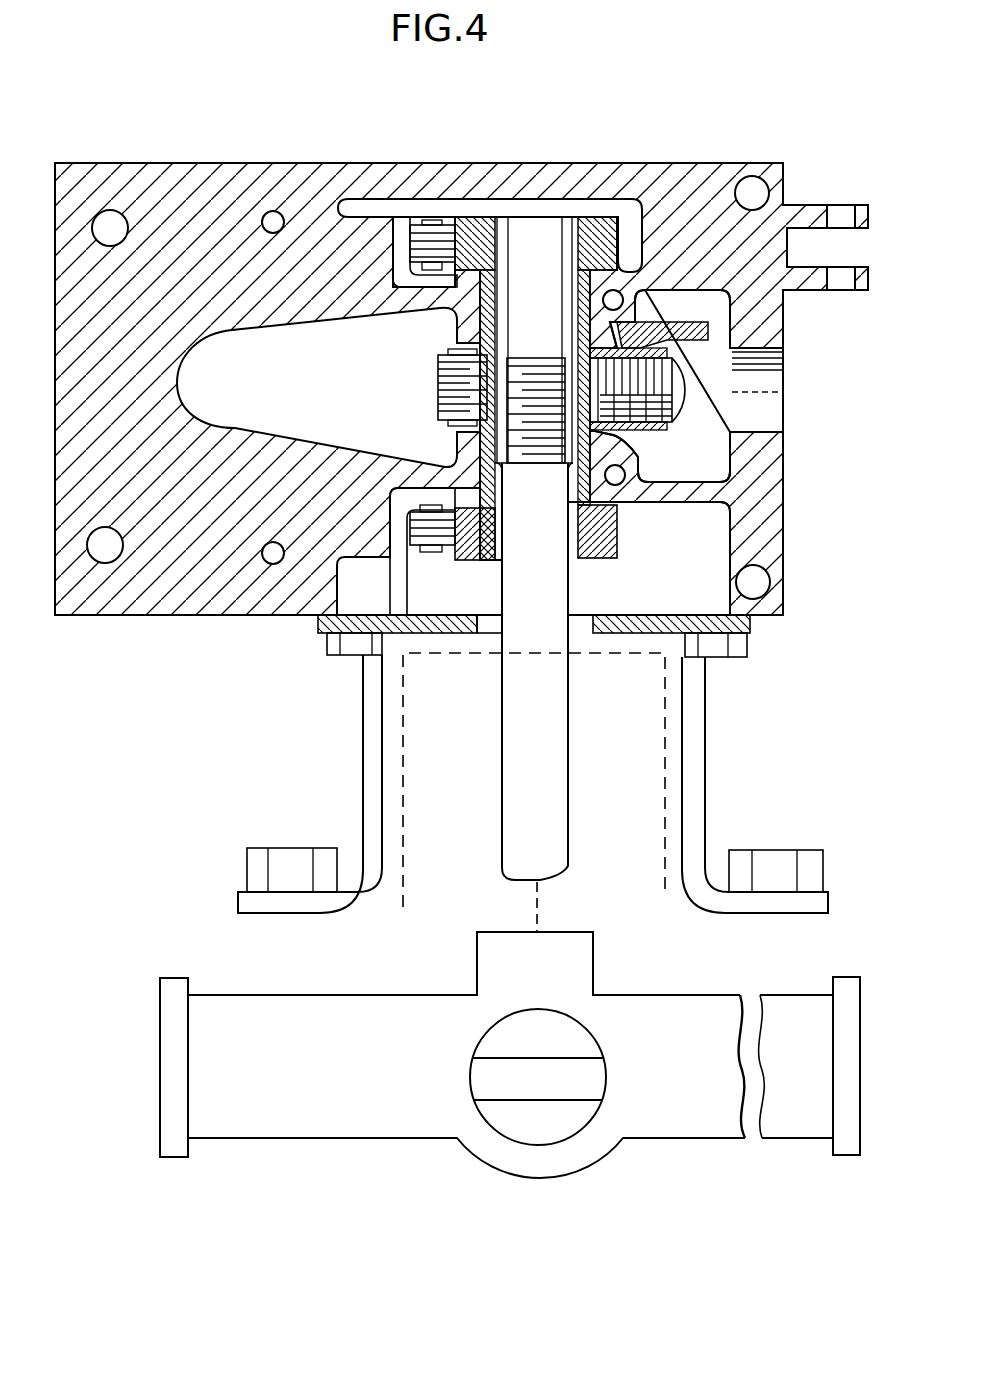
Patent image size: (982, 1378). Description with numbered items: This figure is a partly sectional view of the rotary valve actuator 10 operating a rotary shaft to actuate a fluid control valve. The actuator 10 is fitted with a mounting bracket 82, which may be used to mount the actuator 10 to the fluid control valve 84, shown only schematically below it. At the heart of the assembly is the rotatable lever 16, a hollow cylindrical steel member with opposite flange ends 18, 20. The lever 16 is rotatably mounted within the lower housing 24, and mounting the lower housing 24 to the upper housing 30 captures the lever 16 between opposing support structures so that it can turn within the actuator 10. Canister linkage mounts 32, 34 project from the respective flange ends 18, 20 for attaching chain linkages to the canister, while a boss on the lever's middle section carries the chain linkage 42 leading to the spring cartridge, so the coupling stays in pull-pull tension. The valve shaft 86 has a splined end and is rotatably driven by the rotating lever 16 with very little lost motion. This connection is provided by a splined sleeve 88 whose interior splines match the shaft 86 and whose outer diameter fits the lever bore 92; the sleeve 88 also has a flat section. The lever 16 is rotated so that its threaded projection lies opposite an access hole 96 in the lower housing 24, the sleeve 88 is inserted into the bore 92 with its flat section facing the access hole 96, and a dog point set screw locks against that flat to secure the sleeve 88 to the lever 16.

The rotary valve actuator 10 is at (196, 642).
The rotatable lever 16 is at (605, 560).
The flange end 18 is at (617, 525).
The flange end 20 is at (483, 217).
The lower housing 24 is at (783, 477).
The upper housing 30 is at (787, 305).
The canister linkage mount 32 is at (412, 548).
The canister linkage mount 34 is at (410, 222).
The chain linkage 42 is at (438, 394).
The mounting bracket 82 is at (363, 733).
The fluid control valve 84 is at (358, 995).
The valve shaft 86 is at (557, 745).
The splined sleeve 88 is at (528, 362).
The lever bore 92 is at (498, 560).
The access hole 96 is at (765, 403).